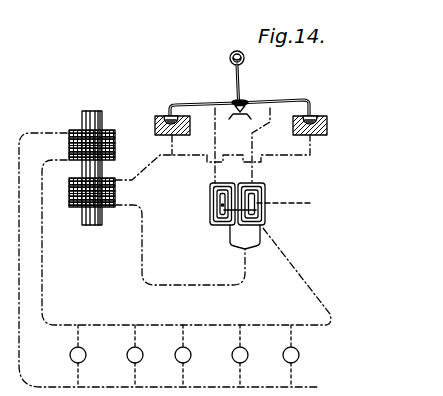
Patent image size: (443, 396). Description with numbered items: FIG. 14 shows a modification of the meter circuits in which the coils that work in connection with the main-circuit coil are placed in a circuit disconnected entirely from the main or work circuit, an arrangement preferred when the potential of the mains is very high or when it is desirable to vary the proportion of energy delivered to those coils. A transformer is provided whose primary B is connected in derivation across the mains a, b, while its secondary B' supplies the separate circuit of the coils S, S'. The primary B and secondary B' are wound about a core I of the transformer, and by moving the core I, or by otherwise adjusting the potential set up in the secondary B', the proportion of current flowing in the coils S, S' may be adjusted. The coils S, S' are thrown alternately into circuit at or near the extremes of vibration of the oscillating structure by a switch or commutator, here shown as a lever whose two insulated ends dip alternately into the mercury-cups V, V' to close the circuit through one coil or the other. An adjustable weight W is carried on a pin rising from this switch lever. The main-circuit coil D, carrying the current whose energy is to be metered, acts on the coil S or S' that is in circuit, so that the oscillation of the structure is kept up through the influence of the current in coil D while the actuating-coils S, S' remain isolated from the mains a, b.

The core I is at (92, 160).
The primary B is at (81, 145).
The secondary B' is at (83, 192).
The adjustable weight W is at (239, 86).
The mercury-cup V is at (164, 125).
The mercury-cup V' is at (318, 125).
The coil S is at (213, 204).
The coil S' is at (263, 204).
The main-circuit coil D is at (253, 201).
The main a is at (291, 204).
The main b is at (200, 357).